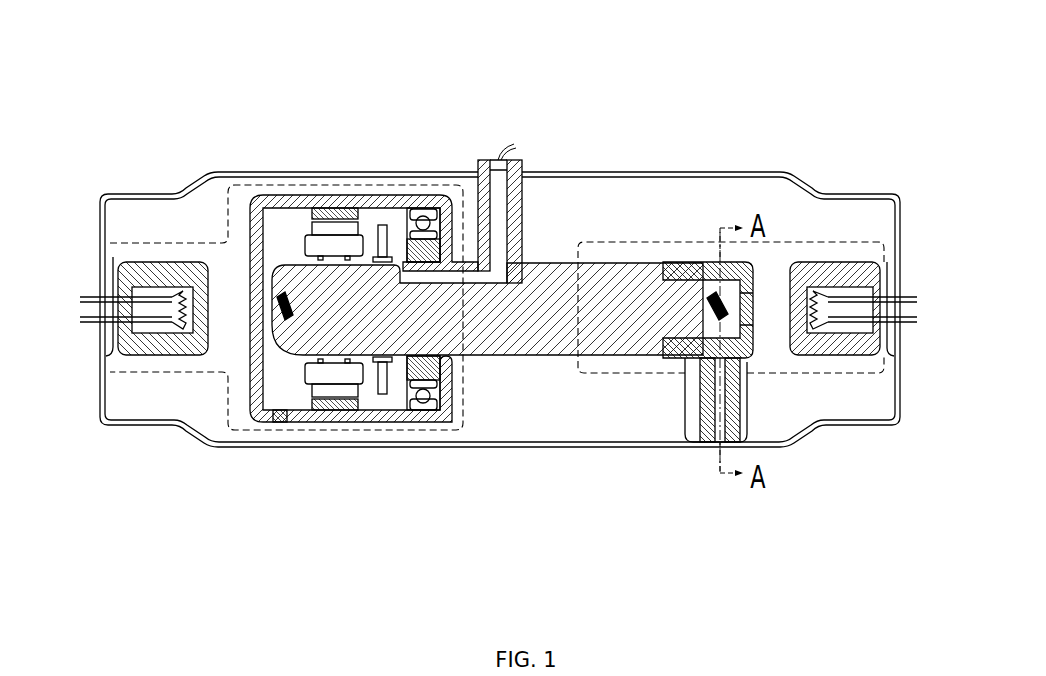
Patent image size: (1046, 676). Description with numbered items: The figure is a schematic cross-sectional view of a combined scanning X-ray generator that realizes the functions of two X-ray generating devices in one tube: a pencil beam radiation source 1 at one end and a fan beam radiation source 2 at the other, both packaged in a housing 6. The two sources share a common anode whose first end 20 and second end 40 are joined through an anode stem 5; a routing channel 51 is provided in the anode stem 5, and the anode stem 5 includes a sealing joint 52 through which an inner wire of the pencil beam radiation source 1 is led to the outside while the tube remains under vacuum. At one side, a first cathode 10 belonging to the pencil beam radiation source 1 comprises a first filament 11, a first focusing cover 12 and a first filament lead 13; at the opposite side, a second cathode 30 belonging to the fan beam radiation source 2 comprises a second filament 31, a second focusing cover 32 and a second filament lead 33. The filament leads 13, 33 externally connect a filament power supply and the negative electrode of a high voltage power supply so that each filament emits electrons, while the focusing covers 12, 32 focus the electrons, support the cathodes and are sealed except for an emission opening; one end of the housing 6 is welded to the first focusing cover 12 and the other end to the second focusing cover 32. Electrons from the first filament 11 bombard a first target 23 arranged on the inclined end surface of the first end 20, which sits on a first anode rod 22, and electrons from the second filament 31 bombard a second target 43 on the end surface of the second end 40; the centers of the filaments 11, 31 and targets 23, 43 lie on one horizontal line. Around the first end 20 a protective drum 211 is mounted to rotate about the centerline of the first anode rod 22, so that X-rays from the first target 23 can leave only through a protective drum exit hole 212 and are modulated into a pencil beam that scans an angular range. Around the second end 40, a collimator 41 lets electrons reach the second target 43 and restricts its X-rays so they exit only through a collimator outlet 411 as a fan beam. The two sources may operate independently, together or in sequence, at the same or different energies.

The pencil beam radiation source 1 is at (112, 236).
The fan beam radiation source 2 is at (888, 228).
The housing 6 is at (428, 448).
The first cathode 10 is at (163, 252).
The first filament 11 is at (174, 342).
The first focusing cover 12 is at (132, 358).
The first filament lead 13 is at (106, 335).
The first end of the anode 20 is at (240, 229).
The first anode rod 22 is at (292, 274).
The first target 23 is at (283, 322).
The protective drum 211 is at (333, 208).
The protective drum exit hole 212 is at (280, 424).
The second cathode 30 is at (848, 250).
The second filament 31 is at (826, 356).
The second focusing cover 32 is at (870, 357).
The second filament lead 33 is at (897, 327).
The second end of the anode 40 is at (667, 245).
The collimator 41 is at (686, 368).
The second target 43 is at (714, 290).
The collimator outlet 411 is at (718, 446).
The anode stem 5 is at (523, 160).
The routing channel 51 is at (478, 162).
The sealing joint 52 is at (492, 160).